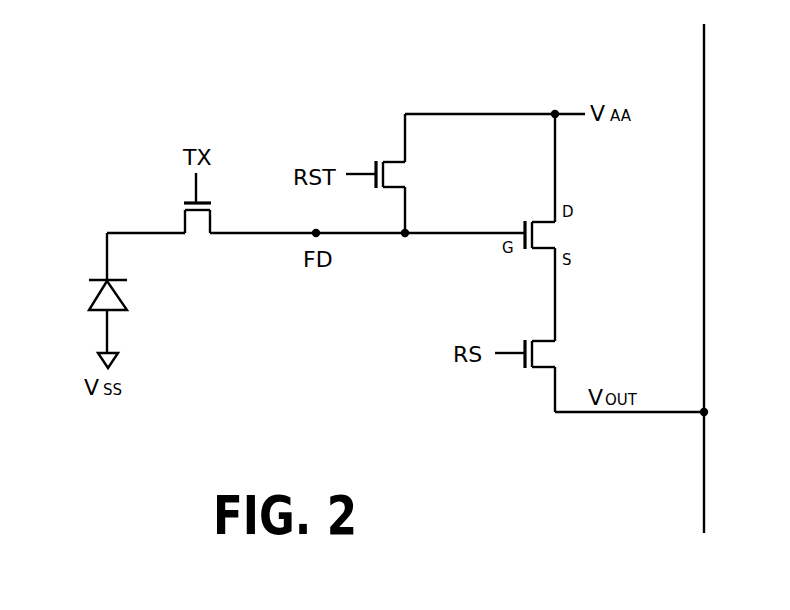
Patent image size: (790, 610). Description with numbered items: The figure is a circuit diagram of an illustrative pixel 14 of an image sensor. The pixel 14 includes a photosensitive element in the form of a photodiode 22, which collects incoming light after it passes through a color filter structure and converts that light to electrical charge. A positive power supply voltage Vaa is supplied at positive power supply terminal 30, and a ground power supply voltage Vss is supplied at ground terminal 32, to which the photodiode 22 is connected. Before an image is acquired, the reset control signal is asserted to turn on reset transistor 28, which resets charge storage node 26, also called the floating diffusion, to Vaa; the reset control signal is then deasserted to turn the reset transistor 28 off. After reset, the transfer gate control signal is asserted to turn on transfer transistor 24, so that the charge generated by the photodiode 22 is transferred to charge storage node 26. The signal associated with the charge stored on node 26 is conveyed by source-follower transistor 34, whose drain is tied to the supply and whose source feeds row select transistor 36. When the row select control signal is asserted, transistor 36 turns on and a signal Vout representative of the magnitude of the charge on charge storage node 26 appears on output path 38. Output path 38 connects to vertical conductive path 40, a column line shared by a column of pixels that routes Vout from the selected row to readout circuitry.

The pixel 14 is at (150, 68).
The photodiode 22 is at (102, 297).
The transfer transistor 24 is at (197, 228).
The charge storage node 26 is at (316, 230).
The reset transistor 28 is at (398, 175).
The positive power supply terminal 30 is at (575, 112).
The ground terminal 32 is at (98, 362).
The source-follower transistor 34 is at (545, 224).
The row select transistor 36 is at (547, 352).
The output path 38 is at (615, 413).
The vertical conductive path 40 is at (704, 481).